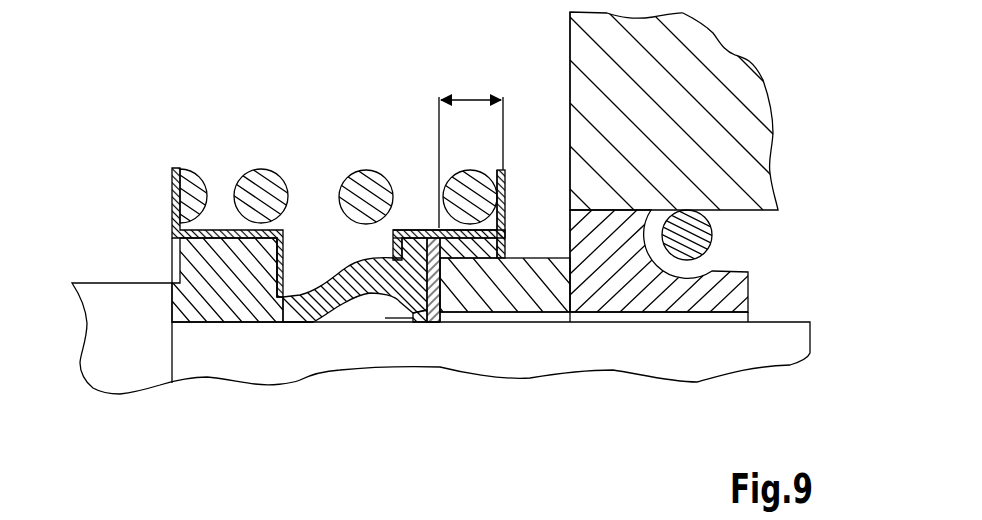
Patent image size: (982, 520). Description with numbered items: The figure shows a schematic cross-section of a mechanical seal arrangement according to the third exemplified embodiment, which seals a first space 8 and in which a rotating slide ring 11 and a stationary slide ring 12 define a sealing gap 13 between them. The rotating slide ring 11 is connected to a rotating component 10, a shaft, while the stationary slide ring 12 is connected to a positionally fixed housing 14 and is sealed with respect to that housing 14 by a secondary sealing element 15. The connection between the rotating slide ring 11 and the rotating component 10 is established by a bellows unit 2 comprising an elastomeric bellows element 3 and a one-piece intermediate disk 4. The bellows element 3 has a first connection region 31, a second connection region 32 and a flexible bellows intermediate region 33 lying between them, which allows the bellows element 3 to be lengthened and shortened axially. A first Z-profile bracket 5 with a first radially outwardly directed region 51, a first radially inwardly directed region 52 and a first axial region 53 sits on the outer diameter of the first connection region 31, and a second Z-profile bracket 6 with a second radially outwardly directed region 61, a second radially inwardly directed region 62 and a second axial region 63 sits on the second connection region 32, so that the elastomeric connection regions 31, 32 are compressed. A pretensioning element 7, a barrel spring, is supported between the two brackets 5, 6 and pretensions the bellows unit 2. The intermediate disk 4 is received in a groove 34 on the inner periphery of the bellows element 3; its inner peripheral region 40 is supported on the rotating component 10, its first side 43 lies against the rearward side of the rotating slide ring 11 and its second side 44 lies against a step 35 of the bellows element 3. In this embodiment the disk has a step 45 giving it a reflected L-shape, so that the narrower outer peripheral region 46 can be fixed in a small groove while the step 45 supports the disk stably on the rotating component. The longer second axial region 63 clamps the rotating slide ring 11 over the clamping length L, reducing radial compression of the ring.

The bellows unit 2 is at (118, 185).
The bellows element 3 is at (242, 337).
The intermediate disk 4 is at (453, 305).
The first Z-profile bracket 5 is at (186, 215).
The second Z-profile bracket 6 is at (461, 179).
The pretensioning element 7 is at (262, 182).
The first space 8 is at (335, 92).
The rotating component 10 is at (742, 355).
The rotating slide ring 11 is at (537, 295).
The stationary slide ring 12 is at (650, 290).
The sealing gap 13 is at (578, 295).
The housing 14 is at (757, 103).
The secondary sealing element 15 is at (713, 234).
The first connection region 31 is at (207, 265).
The second connection region 32 is at (462, 188).
The bellows intermediate region 33 is at (340, 322).
The groove 34 is at (358, 256).
The step 35 is at (452, 268).
The inner peripheral region 40 is at (437, 334).
The first side 43 is at (473, 300).
The second side 44 is at (395, 318).
The step 45 is at (410, 322).
The outer peripheral region 46 is at (414, 228).
The first radially outwardly directed region 51 is at (172, 194).
The first radially inwardly directed region 52 is at (300, 243).
The first axial region 53 is at (220, 212).
The second radially outwardly directed region 61 is at (503, 205).
The second radially inwardly directed region 62 is at (386, 250).
The second axial region 63 is at (396, 234).
The clamping length L is at (471, 100).